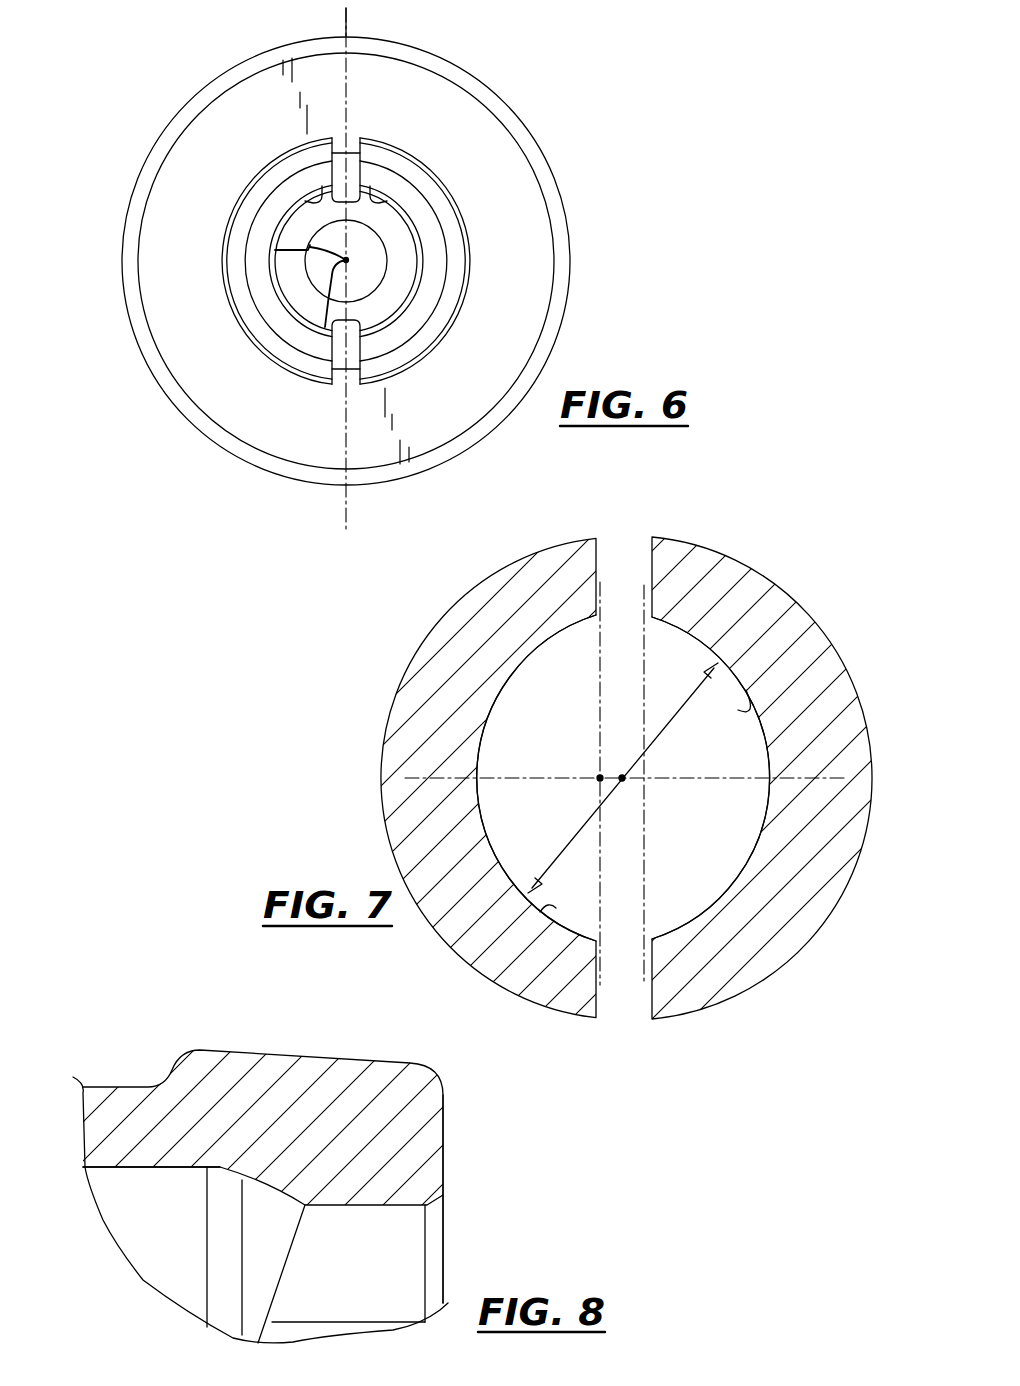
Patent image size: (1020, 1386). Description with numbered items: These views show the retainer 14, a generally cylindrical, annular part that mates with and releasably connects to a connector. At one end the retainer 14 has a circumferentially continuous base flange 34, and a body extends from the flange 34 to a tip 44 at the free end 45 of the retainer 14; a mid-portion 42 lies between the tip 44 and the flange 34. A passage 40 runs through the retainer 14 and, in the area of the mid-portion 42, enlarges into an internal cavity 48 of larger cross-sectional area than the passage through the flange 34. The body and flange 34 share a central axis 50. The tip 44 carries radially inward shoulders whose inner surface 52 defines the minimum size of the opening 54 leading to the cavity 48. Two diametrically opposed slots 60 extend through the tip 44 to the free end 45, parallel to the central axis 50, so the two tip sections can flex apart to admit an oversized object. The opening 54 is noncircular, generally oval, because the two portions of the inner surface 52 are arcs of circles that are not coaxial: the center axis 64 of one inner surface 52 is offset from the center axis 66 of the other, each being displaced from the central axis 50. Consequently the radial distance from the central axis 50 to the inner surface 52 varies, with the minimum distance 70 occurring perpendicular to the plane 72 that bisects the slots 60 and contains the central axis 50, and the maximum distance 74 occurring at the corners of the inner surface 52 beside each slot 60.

In FIG. 6, the retainer 14 is at (498, 42).
In FIG. 6, the base flange 34 is at (483, 116).
In FIG. 6, the passage 40 is at (362, 293).
In FIG. 8, the mid-portion 42 is at (110, 1107).
In FIG. 6, the tip 44 is at (463, 232).
In FIG. 7, the tip 44 is at (775, 605).
In FIG. 8, the tip 44 is at (268, 1073).
In FIG. 8, the free end 45 is at (447, 1135).
In FIG. 8, the internal cavity 48 is at (172, 1192).
In FIG. 6, the central axis 50 is at (346, 260).
In FIG. 7, the central axis 50 is at (598, 790).
In FIG. 6, the inner surface 52 is at (318, 198).
In FIG. 7, the inner surface 52 is at (746, 690).
In FIG. 8, the inner surface 52 is at (403, 1210).
In FIG. 7, the opening 54 is at (706, 877).
In FIG. 8, the opening 54 is at (443, 1254).
In FIG. 6, the slots 60 is at (348, 157).
In FIG. 7, the center axis 64 is at (622, 778).
In FIG. 7, the center axis 66 is at (600, 778).
In FIG. 6, the minimum distance 70 is at (310, 245).
In FIG. 6, the plane 72 is at (348, 20).
In FIG. 6, the maximum distance 74 is at (330, 297).